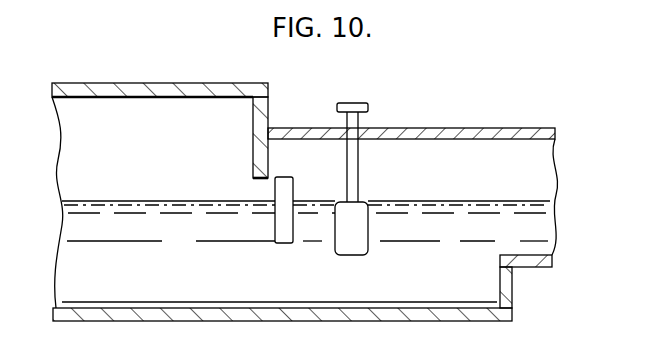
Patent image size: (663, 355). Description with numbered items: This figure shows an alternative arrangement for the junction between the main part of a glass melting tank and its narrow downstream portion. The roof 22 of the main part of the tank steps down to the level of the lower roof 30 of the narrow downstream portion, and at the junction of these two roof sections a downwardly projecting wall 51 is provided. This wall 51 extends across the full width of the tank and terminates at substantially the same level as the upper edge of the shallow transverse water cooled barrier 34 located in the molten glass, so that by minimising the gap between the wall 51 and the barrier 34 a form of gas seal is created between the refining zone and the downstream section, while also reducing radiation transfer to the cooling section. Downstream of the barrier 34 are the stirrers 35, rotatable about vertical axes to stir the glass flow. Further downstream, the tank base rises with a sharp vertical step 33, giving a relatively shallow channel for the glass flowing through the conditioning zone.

The roof 22 is at (128, 83).
The downwardly projecting wall 51 is at (262, 150).
The lower roof 30 is at (510, 133).
The sharp vertical step 33 is at (514, 278).
The water cooled barrier 34 is at (287, 182).
The stirrers 35 is at (366, 202).